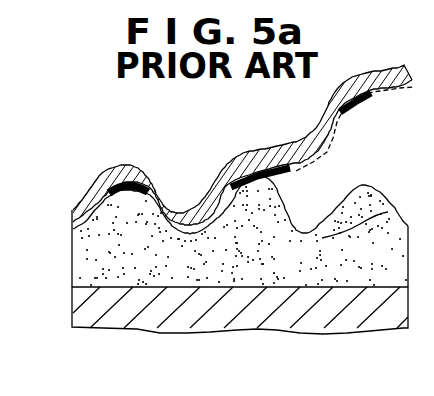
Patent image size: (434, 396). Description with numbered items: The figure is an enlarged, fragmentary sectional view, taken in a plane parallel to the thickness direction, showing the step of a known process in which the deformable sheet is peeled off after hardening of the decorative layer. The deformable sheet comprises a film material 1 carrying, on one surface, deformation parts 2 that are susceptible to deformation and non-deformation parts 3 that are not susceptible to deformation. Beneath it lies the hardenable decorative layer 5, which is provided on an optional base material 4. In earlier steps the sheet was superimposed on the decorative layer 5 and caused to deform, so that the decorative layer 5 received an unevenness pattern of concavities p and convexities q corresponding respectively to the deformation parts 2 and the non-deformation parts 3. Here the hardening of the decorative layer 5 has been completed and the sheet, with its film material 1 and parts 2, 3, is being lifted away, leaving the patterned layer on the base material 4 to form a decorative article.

The film material 1 is at (125, 172).
The deformation parts 2 is at (73, 222).
The non-deformation parts 3 is at (354, 98).
The base material 4 is at (261, 323).
The decorative layer 5 is at (273, 208).
The concavities p is at (388, 212).
The convexities q is at (251, 183).